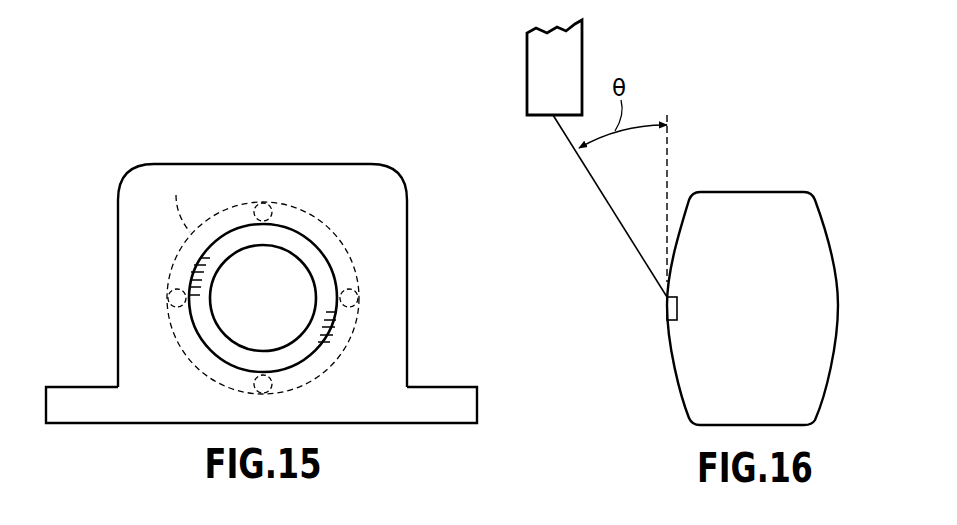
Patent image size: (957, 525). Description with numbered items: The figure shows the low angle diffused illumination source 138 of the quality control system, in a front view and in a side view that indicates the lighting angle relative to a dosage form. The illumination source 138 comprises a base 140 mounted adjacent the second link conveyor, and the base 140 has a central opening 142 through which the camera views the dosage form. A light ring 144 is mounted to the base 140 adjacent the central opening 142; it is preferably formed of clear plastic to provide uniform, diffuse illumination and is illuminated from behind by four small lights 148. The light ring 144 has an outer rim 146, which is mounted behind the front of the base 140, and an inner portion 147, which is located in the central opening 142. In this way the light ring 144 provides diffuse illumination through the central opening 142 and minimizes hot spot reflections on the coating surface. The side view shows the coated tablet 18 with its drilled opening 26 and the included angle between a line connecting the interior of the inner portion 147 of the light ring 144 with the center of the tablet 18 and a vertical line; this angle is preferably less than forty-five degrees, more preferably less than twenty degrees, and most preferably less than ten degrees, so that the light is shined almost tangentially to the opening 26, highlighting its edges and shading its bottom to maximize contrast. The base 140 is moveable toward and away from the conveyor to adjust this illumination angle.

In FIG. 15, the illumination source 138 is at (414, 209).
In FIG. 15, the base 140 is at (454, 395).
In FIG. 15, the central opening 142 is at (285, 310).
In FIG. 15, the light ring 144 is at (229, 204).
In FIG. 15, the outer rim 146 is at (163, 201).
In FIG. 15, the inner portion 147 is at (217, 348).
In FIG. 16, the inner portion 147 is at (527, 78).
In FIG. 15, the small lights 148 is at (289, 210).
In FIG. 16, the bi-layer core tablet 18 is at (752, 192).
In FIG. 16, the opening 26 is at (680, 306).